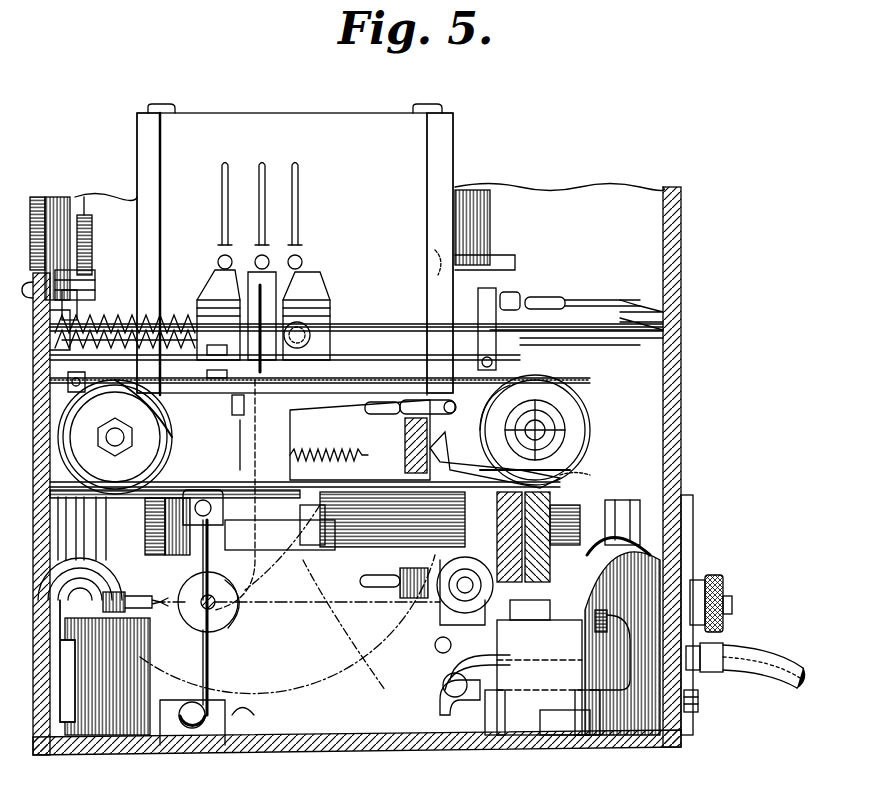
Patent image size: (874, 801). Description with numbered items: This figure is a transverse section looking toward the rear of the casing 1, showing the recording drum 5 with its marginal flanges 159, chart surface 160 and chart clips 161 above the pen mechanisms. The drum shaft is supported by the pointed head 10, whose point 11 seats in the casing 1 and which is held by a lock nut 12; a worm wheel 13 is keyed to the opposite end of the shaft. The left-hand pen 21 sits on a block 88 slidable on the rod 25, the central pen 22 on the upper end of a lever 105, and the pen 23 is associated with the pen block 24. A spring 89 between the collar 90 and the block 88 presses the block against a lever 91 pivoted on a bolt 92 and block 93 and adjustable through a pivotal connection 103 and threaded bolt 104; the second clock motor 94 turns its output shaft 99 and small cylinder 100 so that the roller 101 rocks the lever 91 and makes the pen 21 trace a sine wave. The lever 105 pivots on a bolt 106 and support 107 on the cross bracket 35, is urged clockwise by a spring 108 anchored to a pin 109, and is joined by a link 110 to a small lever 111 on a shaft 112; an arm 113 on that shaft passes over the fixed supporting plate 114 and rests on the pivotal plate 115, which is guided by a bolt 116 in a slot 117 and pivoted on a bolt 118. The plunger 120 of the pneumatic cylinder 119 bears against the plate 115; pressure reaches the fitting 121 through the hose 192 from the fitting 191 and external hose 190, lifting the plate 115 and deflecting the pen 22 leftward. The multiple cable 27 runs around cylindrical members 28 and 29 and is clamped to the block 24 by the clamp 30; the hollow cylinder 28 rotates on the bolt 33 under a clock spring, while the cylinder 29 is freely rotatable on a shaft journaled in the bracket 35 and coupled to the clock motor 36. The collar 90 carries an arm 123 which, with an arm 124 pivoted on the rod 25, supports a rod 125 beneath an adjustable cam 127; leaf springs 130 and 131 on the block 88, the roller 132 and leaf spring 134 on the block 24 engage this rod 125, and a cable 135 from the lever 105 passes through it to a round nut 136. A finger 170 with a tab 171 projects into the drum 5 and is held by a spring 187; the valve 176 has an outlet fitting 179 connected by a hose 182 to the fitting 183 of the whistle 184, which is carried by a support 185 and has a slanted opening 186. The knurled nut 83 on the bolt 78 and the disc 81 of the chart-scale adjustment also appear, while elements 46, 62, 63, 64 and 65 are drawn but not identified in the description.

The casing 1 is at (682, 360).
The recording drum 5 is at (322, 106).
The pointed head 10 is at (580, 298).
The point 11 is at (642, 300).
The lock nut 12 is at (538, 296).
The worm wheel 13 is at (84, 197).
The left-hand pen 21 is at (224, 167).
The central pen 22 is at (262, 162).
The pen 23 is at (296, 162).
The pen block 24 is at (272, 300).
The rod 25 is at (406, 322).
The multiple cable 27 is at (165, 465).
The cylindrical member 28 is at (175, 430).
The cylinder 29 is at (588, 396).
The clamp 30 is at (332, 385).
The bolt 33 is at (115, 452).
The cross bracket 35 is at (655, 443).
The clock motor 36 is at (372, 664).
The hub 46 is at (590, 416).
The housing 62 is at (665, 560).
The block 63 is at (555, 735).
The block 64 is at (585, 735).
The fitting 65 is at (634, 616).
The threaded bolt 78 is at (735, 606).
The disc 81 is at (694, 518).
The knurled nut 83 is at (726, 588).
The block 88 is at (208, 292).
The spring 89 is at (172, 318).
The collar 90 is at (100, 320).
The lever 91 is at (245, 458).
The bolt 92 is at (190, 730).
The block 93 is at (240, 735).
The second clock motor 94 is at (273, 678).
The output shaft 99 is at (216, 595).
The small cylinder 100 is at (222, 625).
The small roller 101 is at (240, 602).
The pivotal connection 103 is at (202, 500).
The threaded bolt 104 is at (160, 498).
The lever 105 is at (292, 460).
The bolt 106 is at (298, 552).
The support 107 is at (365, 520).
The spring 108 is at (400, 440).
The pin 109 is at (400, 460).
The link 110 is at (388, 405).
The small lever 111 is at (458, 418).
The shaft 112 is at (392, 502).
The arm 113 is at (565, 465).
The fixed supporting plate 114 is at (400, 515).
The pivotal plate 115 is at (552, 492).
The bolt 116 is at (552, 515).
The slot 117 is at (560, 545).
The bolt 118 is at (622, 560).
The pneumatic cylinder 119 is at (505, 735).
The plunger 120 is at (518, 700).
The fitting 121 is at (458, 720).
The arm 123 is at (78, 392).
The arm 124 is at (492, 320).
The rod 125 is at (374, 352).
The adjustable cam 127 is at (92, 282).
The leaf spring 130 is at (215, 345).
The leaf spring 131 is at (205, 385).
The roller 132 is at (312, 322).
The leaf spring 134 is at (318, 452).
The cable 135 is at (305, 270).
The round nut 136 is at (238, 398).
The marginal flanges 159 is at (145, 150).
The surface 160 is at (262, 113).
The clips 161 is at (163, 104).
The finger 170 is at (432, 250).
The tab 171 is at (492, 255).
The valve 176 is at (440, 562).
The outlet fitting 179 is at (412, 600).
The hose 182 is at (340, 620).
The fitting 183 is at (110, 630).
The whistle 184 is at (145, 515).
The support 185 is at (70, 655).
The slanted opening 186 is at (85, 560).
The spring 187 is at (435, 648).
The external hose 190 is at (772, 652).
The fitting 191 is at (715, 672).
The hose 192 is at (440, 675).